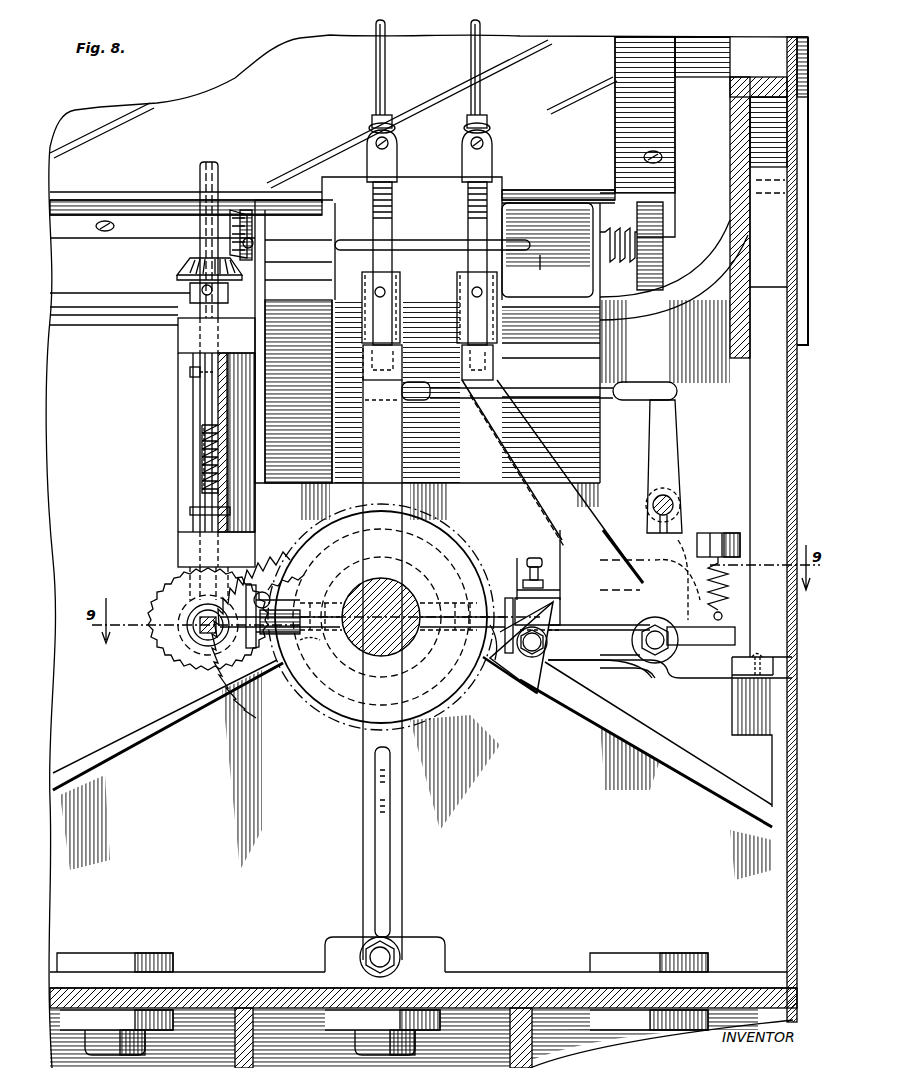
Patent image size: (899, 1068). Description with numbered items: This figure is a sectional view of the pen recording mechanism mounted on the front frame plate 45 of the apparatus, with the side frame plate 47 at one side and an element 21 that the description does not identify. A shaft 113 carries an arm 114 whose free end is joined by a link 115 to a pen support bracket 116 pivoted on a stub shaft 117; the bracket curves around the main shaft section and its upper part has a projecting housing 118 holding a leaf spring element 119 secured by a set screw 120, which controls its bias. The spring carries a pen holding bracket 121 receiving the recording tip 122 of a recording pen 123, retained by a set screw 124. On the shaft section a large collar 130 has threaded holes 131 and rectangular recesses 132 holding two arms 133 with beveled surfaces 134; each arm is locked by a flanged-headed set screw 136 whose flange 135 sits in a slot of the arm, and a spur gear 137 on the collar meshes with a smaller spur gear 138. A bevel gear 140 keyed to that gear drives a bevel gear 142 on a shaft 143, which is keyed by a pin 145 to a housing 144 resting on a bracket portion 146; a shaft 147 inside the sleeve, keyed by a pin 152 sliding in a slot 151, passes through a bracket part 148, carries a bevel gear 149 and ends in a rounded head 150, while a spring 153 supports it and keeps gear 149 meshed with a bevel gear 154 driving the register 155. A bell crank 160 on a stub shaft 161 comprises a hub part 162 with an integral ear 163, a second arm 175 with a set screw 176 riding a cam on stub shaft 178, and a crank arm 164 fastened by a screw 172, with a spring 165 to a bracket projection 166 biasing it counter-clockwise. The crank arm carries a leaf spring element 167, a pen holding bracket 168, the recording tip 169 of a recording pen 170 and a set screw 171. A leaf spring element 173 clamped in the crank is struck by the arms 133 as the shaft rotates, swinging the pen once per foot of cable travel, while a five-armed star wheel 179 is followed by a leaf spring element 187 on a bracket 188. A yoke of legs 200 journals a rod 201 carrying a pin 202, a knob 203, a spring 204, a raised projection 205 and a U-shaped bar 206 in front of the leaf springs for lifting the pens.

The frame 21 is at (95, 117).
The front frame plate 45 is at (712, 402).
The side frame plate 47 is at (770, 70).
The shaft 113 is at (674, 500).
The arm 114 is at (672, 450).
The link 115 is at (590, 392).
The pen support bracket 116 is at (363, 428).
The stub shaft 117 is at (372, 950).
The projecting housing 118 is at (372, 372).
The leaf spring element 119 is at (392, 200).
The set screw 120 is at (468, 288).
The pen holding bracket 121 is at (367, 145).
The recording tip 122 is at (370, 130).
The recording pen 123 is at (376, 62).
The set screw 124 is at (372, 118).
The collar 130 is at (305, 700).
The threaded holes 131 is at (448, 640).
The rectangular recesses 132 is at (450, 588).
The arm 133 is at (225, 640).
The beveled surface 134 is at (548, 625).
The flange 135 is at (512, 600).
The flanged-headed set screw 136 is at (495, 660).
The spur gear 137 is at (258, 585).
The spur gear 138 is at (178, 665).
The bevel gear 140 is at (168, 640).
The bevel gear 142 is at (185, 590).
The shaft 143 is at (205, 524).
The housing 144 is at (195, 467).
The pin 145 is at (190, 511).
The bracket portion 146 is at (187, 548).
The shaft 147 is at (205, 388).
The bracket part 148 is at (183, 340).
The bevel gear 149 is at (177, 268).
The rounded head 150 is at (212, 162).
The slot 151 is at (193, 398).
The pin 152 is at (190, 371).
The spring 153 is at (202, 445).
The bevel gear 154 is at (233, 212).
The register 155 is at (345, 177).
The bell crank 160 is at (616, 560).
The stub shaft 161 is at (648, 665).
The hub part 162 is at (662, 665).
The ear 163 is at (716, 645).
The crank arm 164 is at (585, 522).
The spring 165 is at (730, 588).
The bracket projection 166 is at (725, 533).
The leaf spring element 167 is at (487, 192).
The pen holding bracket 168 is at (492, 157).
The recording tip 169 is at (490, 134).
The recording pen 170 is at (480, 66).
The set screw 171 is at (487, 118).
The screw 172 is at (680, 565).
The leaf spring element 173 is at (595, 628).
The second arm 175 is at (555, 592).
The set screw 176 is at (538, 554).
The stub shaft 178 is at (560, 672).
The star wheel 179 is at (518, 680).
The leaf spring element 187 is at (606, 675).
The bracket 188 is at (732, 712).
The legs 200 is at (570, 203).
The rod 201 is at (560, 260).
The pin 202 is at (268, 242).
The knob 203 is at (648, 202).
The spring 204 is at (615, 230).
The raised projection 205 is at (260, 268).
The U-shaped bar 206 is at (535, 255).